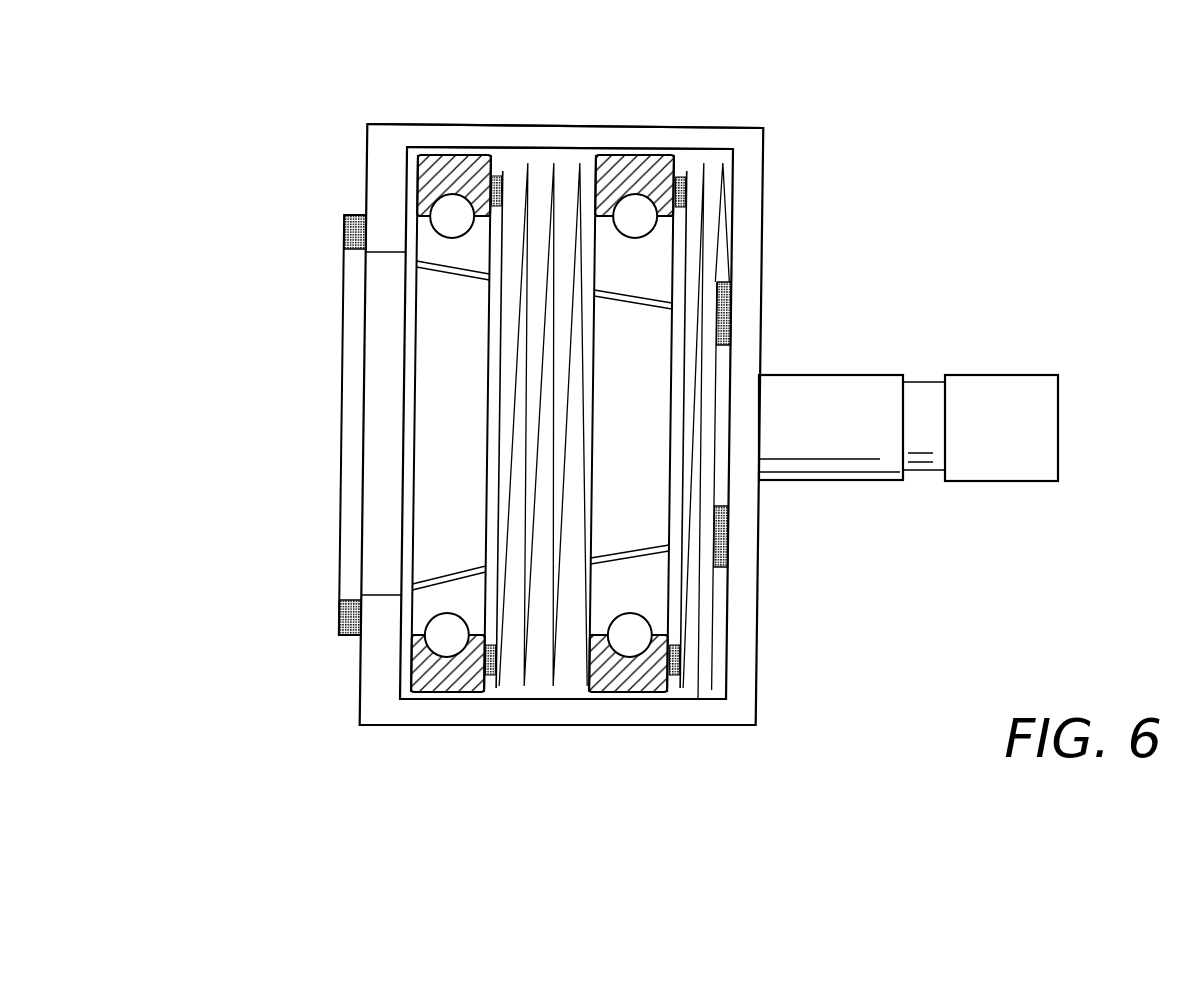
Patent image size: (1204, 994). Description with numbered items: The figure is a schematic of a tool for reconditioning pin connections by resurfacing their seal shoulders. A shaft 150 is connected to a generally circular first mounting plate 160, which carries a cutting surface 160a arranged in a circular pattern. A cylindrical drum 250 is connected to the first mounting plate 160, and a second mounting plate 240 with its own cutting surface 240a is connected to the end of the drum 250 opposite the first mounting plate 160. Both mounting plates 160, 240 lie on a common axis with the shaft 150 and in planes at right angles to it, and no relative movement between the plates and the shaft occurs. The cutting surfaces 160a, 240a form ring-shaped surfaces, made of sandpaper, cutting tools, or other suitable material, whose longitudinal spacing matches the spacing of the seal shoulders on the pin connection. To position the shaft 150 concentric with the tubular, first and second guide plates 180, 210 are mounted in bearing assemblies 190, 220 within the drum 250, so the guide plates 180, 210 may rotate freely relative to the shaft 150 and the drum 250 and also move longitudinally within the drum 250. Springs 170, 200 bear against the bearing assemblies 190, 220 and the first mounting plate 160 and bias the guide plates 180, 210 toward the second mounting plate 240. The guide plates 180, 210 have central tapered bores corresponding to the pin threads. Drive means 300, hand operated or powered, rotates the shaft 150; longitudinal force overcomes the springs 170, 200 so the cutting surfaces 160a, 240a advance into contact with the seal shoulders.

The shaft 150 is at (831, 386).
The first mounting plate 160 is at (752, 662).
The cutting surface 160a is at (730, 536).
The spring 170 is at (700, 682).
The first guide plate 180 is at (650, 622).
The bearing assembly 190 is at (658, 165).
The spring 200 is at (557, 680).
The second guide plate 210 is at (420, 618).
The bearing assembly 220 is at (445, 165).
The second mounting plate 240 is at (372, 675).
The cutting surface 240a is at (337, 618).
The cylindrical drum 250 is at (571, 133).
The drive means 300 is at (997, 474).